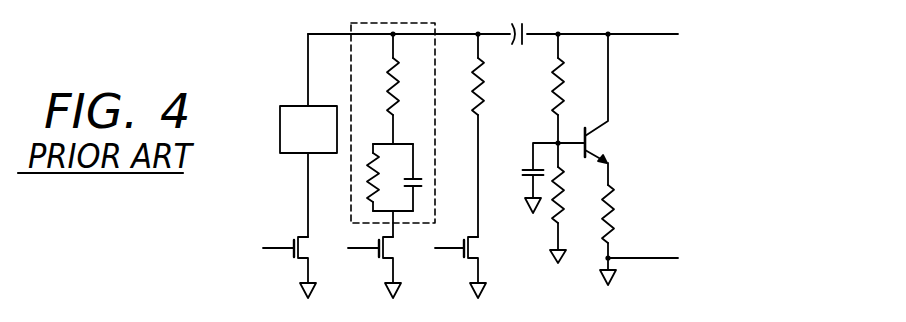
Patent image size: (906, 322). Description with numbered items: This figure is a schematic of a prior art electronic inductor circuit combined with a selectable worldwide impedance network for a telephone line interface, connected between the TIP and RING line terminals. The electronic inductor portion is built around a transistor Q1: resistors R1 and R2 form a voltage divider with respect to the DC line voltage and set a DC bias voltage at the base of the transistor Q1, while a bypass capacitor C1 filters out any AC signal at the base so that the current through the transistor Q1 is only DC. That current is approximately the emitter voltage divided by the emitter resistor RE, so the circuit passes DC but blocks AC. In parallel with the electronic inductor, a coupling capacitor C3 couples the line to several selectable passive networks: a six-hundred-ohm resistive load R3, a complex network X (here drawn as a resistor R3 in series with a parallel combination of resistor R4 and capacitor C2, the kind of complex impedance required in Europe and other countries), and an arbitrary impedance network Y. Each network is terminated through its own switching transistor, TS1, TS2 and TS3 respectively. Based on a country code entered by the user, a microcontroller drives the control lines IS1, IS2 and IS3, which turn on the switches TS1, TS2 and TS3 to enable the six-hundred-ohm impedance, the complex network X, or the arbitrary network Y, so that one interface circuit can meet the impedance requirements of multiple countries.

The complex network X is at (393, 112).
The arbitrary impedance network Y is at (308, 129).
The resistor R1 is at (570, 86).
The resistor R2 is at (568, 215).
The resistive load R3 is at (455, 86).
The resistor R4 is at (382, 177).
The emitter resistor RE is at (618, 224).
The bypass capacitor C1 is at (527, 178).
The coupling capacitor C2 is at (418, 177).
The coupling capacitor C3 is at (515, 22).
The transistor Q1 is at (593, 98).
The transistor switch TS1 is at (460, 267).
The transistor switch TS2 is at (374, 267).
The transistor switch TS3 is at (289, 267).
The control line IS1 is at (437, 241).
The control line IS2 is at (352, 241).
The control line IS3 is at (267, 241).
The TIP terminal TIP is at (657, 22).
The RING terminal RING is at (643, 249).